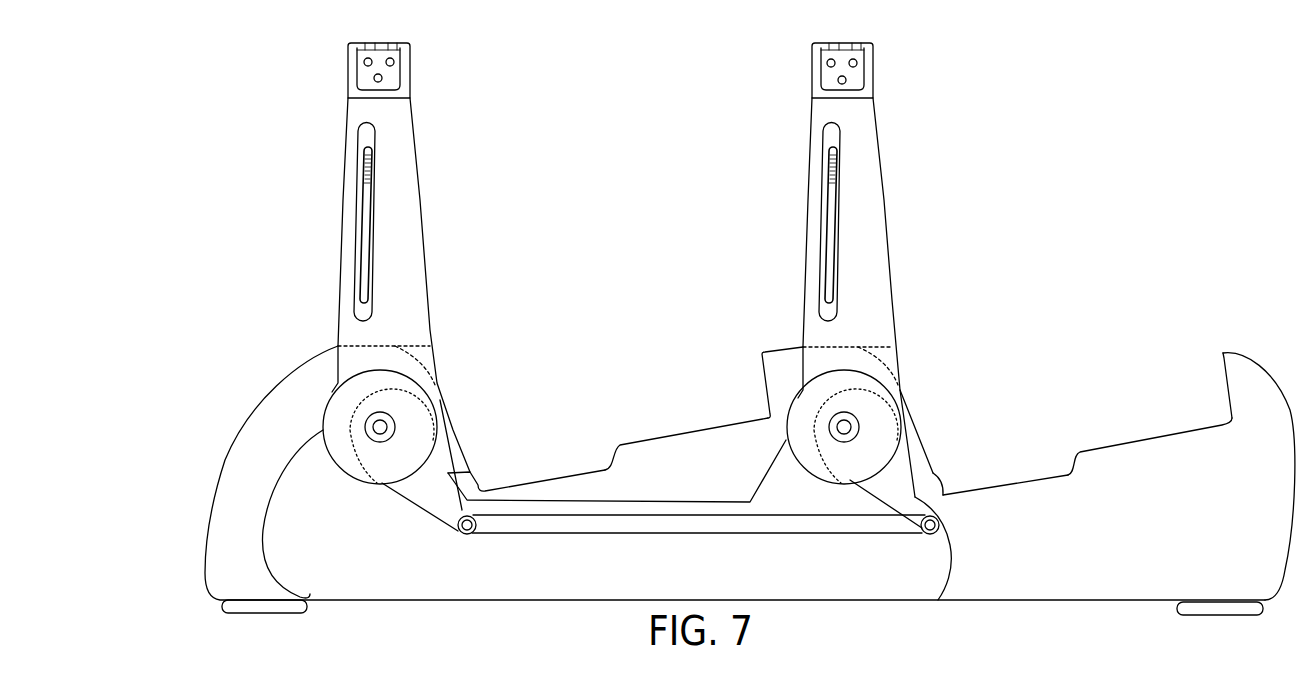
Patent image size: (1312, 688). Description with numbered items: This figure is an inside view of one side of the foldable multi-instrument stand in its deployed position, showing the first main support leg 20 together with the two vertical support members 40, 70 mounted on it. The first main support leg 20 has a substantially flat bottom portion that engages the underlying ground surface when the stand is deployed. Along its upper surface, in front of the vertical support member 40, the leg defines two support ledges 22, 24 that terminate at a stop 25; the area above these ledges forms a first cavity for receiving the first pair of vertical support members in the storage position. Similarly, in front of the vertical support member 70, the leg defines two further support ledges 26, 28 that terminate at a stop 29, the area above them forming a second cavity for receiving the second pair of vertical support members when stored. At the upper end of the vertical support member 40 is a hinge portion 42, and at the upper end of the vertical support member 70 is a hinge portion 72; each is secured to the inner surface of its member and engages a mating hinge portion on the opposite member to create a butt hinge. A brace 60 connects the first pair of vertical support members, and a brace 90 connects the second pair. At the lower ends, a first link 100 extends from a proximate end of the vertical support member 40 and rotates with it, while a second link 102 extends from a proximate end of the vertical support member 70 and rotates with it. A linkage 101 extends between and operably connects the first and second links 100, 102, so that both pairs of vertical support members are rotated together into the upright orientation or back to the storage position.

The first main support leg 20 is at (1115, 578).
The support ledge 22 is at (1168, 430).
The support ledge 24 is at (1028, 480).
The stop 25 is at (1223, 355).
The support ledge 26 is at (660, 437).
The support ledge 28 is at (572, 482).
The stop 29 is at (763, 352).
The vertical support member 40 is at (806, 248).
The hinge portion 42 is at (828, 63).
The brace 60 is at (830, 187).
The vertical support member 70 is at (423, 210).
The hinge portion 72 is at (365, 62).
The brace 90 is at (365, 180).
The first link 100 is at (895, 500).
The linkage 101 is at (560, 527).
The second link 102 is at (420, 495).